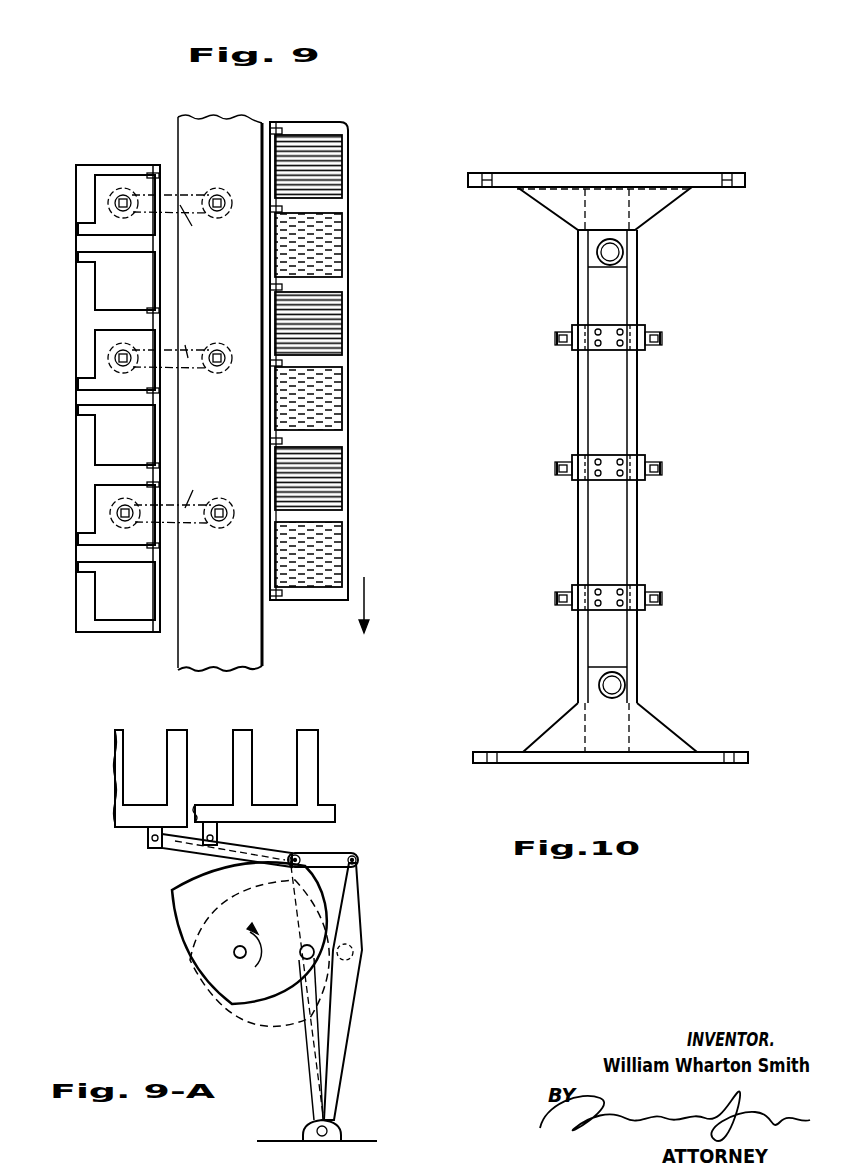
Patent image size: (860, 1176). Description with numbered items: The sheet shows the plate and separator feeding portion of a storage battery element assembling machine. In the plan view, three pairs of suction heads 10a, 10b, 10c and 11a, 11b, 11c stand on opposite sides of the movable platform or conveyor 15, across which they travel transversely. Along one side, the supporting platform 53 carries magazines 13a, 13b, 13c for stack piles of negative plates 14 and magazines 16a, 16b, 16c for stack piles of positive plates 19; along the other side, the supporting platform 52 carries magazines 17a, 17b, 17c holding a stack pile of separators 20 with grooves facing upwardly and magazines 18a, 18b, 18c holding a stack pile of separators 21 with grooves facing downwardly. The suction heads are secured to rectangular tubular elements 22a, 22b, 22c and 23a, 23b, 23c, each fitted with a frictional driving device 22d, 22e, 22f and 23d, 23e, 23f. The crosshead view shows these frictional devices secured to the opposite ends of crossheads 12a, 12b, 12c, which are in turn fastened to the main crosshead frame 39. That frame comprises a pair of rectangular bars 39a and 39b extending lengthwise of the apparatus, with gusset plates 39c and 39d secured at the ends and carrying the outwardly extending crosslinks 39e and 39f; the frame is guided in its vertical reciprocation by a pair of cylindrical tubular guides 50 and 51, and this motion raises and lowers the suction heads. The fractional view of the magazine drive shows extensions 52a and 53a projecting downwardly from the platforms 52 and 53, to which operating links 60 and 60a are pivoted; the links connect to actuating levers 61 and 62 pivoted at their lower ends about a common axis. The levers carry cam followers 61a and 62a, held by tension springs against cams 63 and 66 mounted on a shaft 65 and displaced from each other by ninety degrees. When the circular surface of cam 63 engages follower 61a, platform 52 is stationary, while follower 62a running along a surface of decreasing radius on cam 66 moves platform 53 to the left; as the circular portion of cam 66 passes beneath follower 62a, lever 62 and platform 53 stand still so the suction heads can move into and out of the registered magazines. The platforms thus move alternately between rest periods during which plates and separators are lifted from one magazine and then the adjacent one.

In FIG. 9, the suction head 10a is at (115, 515).
In FIG. 9, the suction head 10b is at (113, 366).
In FIG. 9, the suction head 10c is at (113, 211).
In FIG. 9, the suction head 11a is at (222, 502).
In FIG. 9, the suction head 11b is at (217, 347).
In FIG. 9, the suction head 11c is at (215, 192).
In FIG. 9, the crosshead 12a is at (195, 487).
In FIG. 10, the crosshead 12a is at (614, 588).
In FIG. 9, the crosshead 12b is at (194, 341).
In FIG. 10, the crosshead 12b is at (614, 458).
In FIG. 9, the crosshead 12c is at (195, 228).
In FIG. 10, the crosshead 12c is at (612, 330).
In FIG. 9, the magazine 13a is at (160, 483).
In FIG. 9, the magazine 13b is at (160, 390).
In FIG. 9, the magazine 13c is at (152, 173).
In FIG. 9, the negative plates 14 is at (100, 190).
In FIG. 9, the conveyor 15 is at (180, 119).
In FIG. 9, the magazine 16a is at (160, 562).
In FIG. 9, the magazine 16b is at (160, 408).
In FIG. 9, the magazine 16c is at (160, 309).
In FIG. 9, the magazine 17a is at (272, 444).
In FIG. 9, the magazine 17b is at (272, 290).
In FIG. 9, the magazine 17c is at (275, 130).
In FIG. 9, the magazine 18a is at (272, 594).
In FIG. 9, the magazine 18b is at (272, 366).
In FIG. 9, the magazine 18c is at (272, 212).
In FIG. 9, the positive plates 19 is at (100, 282).
In FIG. 9, the stack pile of separators 20 is at (337, 168).
In FIG. 9, the stack pile of separators 21 is at (337, 252).
In FIG. 10, the tubular element 22a is at (560, 594).
In FIG. 10, the tubular element 22b is at (560, 463).
In FIG. 10, the tubular element 22c is at (559, 332).
In FIG. 10, the frictional driving device 22d is at (558, 606).
In FIG. 10, the frictional driving device 22e is at (558, 476).
In FIG. 10, the frictional driving device 22f is at (558, 345).
In FIG. 10, the tubular element 23a is at (658, 592).
In FIG. 10, the tubular element 23b is at (658, 462).
In FIG. 10, the tubular element 23c is at (657, 332).
In FIG. 10, the frictional driving device 23d is at (657, 607).
In FIG. 10, the frictional driving device 23e is at (657, 478).
In FIG. 10, the frictional driving device 23f is at (659, 344).
In FIG. 10, the crosshead frame 39 is at (568, 392).
In FIG. 10, the rectangular bar 39a is at (640, 640).
In FIG. 10, the rectangular bar 39b is at (583, 654).
In FIG. 10, the gusset plate 39c is at (663, 722).
In FIG. 10, the gusset plate 39d is at (660, 198).
In FIG. 10, the crosslink 39e is at (700, 763).
In FIG. 10, the crosslink 39f is at (696, 172).
In FIG. 10, the tubular guide 50 is at (603, 686).
In FIG. 10, the tubular guide 51 is at (597, 253).
In FIG. 9, the supporting platform 52 is at (311, 603).
In FIG. 9-A, the supporting platform 52 is at (330, 814).
In FIG. 9-A, the extension 52a is at (217, 836).
In FIG. 9, the supporting platform 53 is at (97, 633).
In FIG. 9-A, the supporting platform 53 is at (125, 817).
In FIG. 9-A, the extension 53a is at (150, 837).
In FIG. 9-A, the operating link 60 is at (322, 856).
In FIG. 9-A, the operating link 60a is at (190, 850).
In FIG. 9-A, the actuating lever 61 is at (347, 1006).
In FIG. 9-A, the cam follower 61a is at (352, 948).
In FIG. 9-A, the actuating lever 62 is at (312, 1057).
In FIG. 9-A, the cam follower 62a is at (314, 957).
In FIG. 9-A, the cam 63 is at (270, 1008).
In FIG. 9-A, the shaft 65 is at (236, 955).
In FIG. 9-A, the cam 66 is at (178, 915).